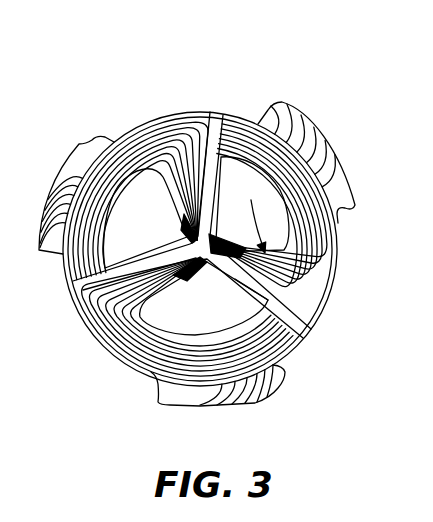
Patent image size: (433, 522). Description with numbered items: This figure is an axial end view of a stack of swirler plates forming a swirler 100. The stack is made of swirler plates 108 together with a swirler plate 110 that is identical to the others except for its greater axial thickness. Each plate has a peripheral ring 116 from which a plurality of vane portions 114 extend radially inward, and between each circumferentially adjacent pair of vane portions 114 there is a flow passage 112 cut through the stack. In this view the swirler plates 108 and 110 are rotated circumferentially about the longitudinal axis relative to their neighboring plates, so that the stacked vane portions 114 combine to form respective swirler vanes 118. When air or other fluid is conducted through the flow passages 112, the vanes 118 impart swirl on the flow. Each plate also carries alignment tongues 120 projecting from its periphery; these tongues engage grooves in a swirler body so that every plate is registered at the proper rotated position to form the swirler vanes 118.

The swirler 100 is at (344, 113).
The swirler plates 108 is at (333, 272).
The swirler plate 110 is at (258, 318).
The flow passages 112 is at (163, 231).
The vane portions 114 is at (181, 151).
The peripheral ring 116 is at (150, 112).
The swirler vanes 118 is at (215, 126).
The alignment tongues 120 is at (82, 142).